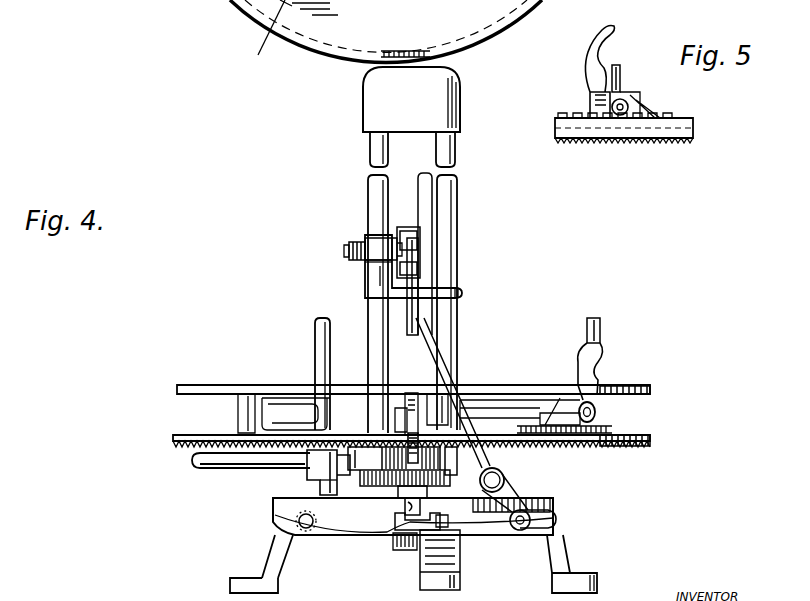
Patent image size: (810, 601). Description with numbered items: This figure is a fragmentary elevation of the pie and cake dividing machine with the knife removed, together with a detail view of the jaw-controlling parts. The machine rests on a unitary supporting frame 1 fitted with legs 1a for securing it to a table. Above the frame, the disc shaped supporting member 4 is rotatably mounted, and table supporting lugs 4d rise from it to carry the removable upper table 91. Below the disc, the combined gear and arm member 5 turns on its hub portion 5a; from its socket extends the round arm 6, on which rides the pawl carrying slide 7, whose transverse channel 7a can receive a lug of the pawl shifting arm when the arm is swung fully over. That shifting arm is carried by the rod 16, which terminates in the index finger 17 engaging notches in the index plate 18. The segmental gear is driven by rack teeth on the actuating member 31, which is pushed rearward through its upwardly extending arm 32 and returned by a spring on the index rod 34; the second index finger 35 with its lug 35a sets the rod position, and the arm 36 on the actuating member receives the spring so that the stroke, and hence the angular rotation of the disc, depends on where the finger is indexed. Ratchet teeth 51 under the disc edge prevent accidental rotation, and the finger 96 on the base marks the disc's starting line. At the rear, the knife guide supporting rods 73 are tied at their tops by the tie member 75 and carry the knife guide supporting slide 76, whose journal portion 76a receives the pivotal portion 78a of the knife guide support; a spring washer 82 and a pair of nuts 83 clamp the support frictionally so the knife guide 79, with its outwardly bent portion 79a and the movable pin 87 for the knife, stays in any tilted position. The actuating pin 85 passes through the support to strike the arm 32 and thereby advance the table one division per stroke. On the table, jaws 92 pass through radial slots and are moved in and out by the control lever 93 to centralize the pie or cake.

In FIG. 4, the supporting frame 1 is at (280, 533).
In FIG. 4, the legs 1a is at (420, 530).
In FIG. 4, the supporting member 4 is at (180, 437).
In FIG. 5, the supporting member 4 is at (695, 128).
In FIG. 4, the table supporting lugs 4d is at (240, 400).
In FIG. 4, the combined gear and arm member 5 is at (392, 468).
In FIG. 4, the hub portion 5a is at (413, 452).
In FIG. 4, the arm 6 is at (192, 462).
In FIG. 4, the pawl carrying slide 7 is at (308, 461).
In FIG. 4, the transverse channel 7a is at (332, 482).
In FIG. 4, the rod 16 is at (306, 528).
In FIG. 4, the index finger 17 is at (278, 521).
In FIG. 4, the index plate 18 is at (410, 540).
In FIG. 4, the actuating member 31 is at (505, 473).
In FIG. 4, the arm 32 is at (432, 334).
In FIG. 4, the index rod 34 is at (440, 522).
In FIG. 4, the index finger 35 is at (556, 519).
In FIG. 4, the lug 35a is at (460, 548).
In FIG. 4, the arm 36 is at (515, 497).
In FIG. 4, the ratchet teeth 51 is at (652, 444).
In FIG. 5, the ratchet teeth 51 is at (675, 140).
In FIG. 4, the knife guide supporting rods 73 is at (370, 153).
In FIG. 4, the tie member 75 is at (373, 107).
In FIG. 4, the knife guide supporting slide 76 is at (370, 280).
In FIG. 4, the journal portion 76a is at (375, 246).
In FIG. 4, the pivotal portion 78a is at (346, 248).
In FIG. 4, the knife guide 79 is at (422, 265).
In FIG. 4, the outwardly bent portion 79a is at (420, 325).
In FIG. 4, the spring washer 82 is at (365, 270).
In FIG. 4, the nuts 83 is at (352, 255).
In FIG. 4, the actuating pin 85 is at (425, 250).
In FIG. 4, the movable pin 87 is at (378, 240).
In FIG. 4, the upper table 91 is at (650, 392).
In FIG. 4, the jaws 92 is at (600, 322).
In FIG. 4, the control lever 93 is at (605, 358).
In FIG. 5, the control lever 93 is at (590, 60).
In FIG. 4, the finger 96 is at (405, 500).